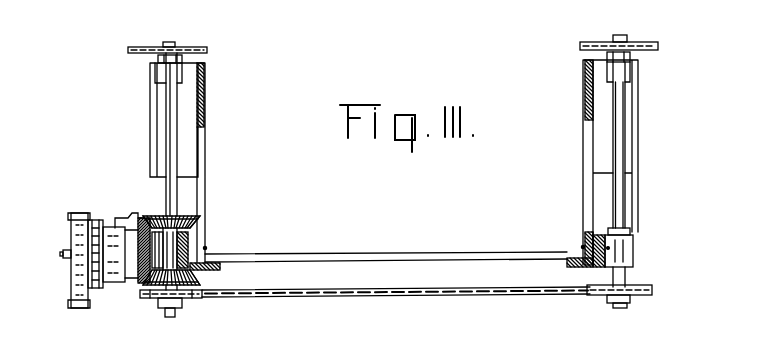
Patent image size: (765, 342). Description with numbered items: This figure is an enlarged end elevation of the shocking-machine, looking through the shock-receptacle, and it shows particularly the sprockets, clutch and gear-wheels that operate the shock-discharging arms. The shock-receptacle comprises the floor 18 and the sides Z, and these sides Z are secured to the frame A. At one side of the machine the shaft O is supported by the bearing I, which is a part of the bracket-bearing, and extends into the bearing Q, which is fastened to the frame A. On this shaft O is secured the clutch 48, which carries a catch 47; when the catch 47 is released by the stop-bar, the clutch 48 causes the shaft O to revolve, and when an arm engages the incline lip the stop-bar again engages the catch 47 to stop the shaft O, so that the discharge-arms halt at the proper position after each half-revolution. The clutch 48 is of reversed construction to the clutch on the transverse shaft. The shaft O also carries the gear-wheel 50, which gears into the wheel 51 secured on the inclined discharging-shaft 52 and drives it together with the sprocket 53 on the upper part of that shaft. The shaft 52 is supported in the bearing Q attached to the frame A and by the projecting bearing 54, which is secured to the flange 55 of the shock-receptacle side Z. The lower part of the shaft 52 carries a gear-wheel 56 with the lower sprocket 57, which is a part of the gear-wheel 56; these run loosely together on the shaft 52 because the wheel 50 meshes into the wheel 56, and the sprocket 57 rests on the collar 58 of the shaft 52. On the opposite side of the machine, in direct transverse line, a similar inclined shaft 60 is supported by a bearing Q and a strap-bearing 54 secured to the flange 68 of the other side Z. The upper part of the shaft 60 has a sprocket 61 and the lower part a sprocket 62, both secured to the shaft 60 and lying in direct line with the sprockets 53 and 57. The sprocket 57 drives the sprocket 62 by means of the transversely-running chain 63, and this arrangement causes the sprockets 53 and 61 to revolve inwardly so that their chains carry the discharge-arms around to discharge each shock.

The floor 18 is at (404, 257).
The catch 47 is at (120, 214).
The clutch 48 is at (130, 285).
The gear-wheel 50 is at (136, 220).
The wheel 51 is at (187, 213).
The inclined discharging-shaft 52 is at (165, 45).
The sprocket 53 is at (207, 50).
The projecting bearing 54 is at (158, 61).
The flange 55 is at (151, 98).
The gear-wheel 56 is at (160, 300).
The lower sprocket 57 is at (197, 299).
The collar 58 is at (164, 309).
The inclined shaft 60 is at (627, 38).
The sprocket 61 is at (580, 46).
The lower sprocket 62 is at (597, 296).
The chain 63 is at (400, 296).
The flange 68 is at (632, 97).
The frame A is at (222, 268).
The bearing I is at (100, 220).
The shaft O is at (60, 252).
The bearing Q is at (188, 242).
The side Z is at (205, 97).